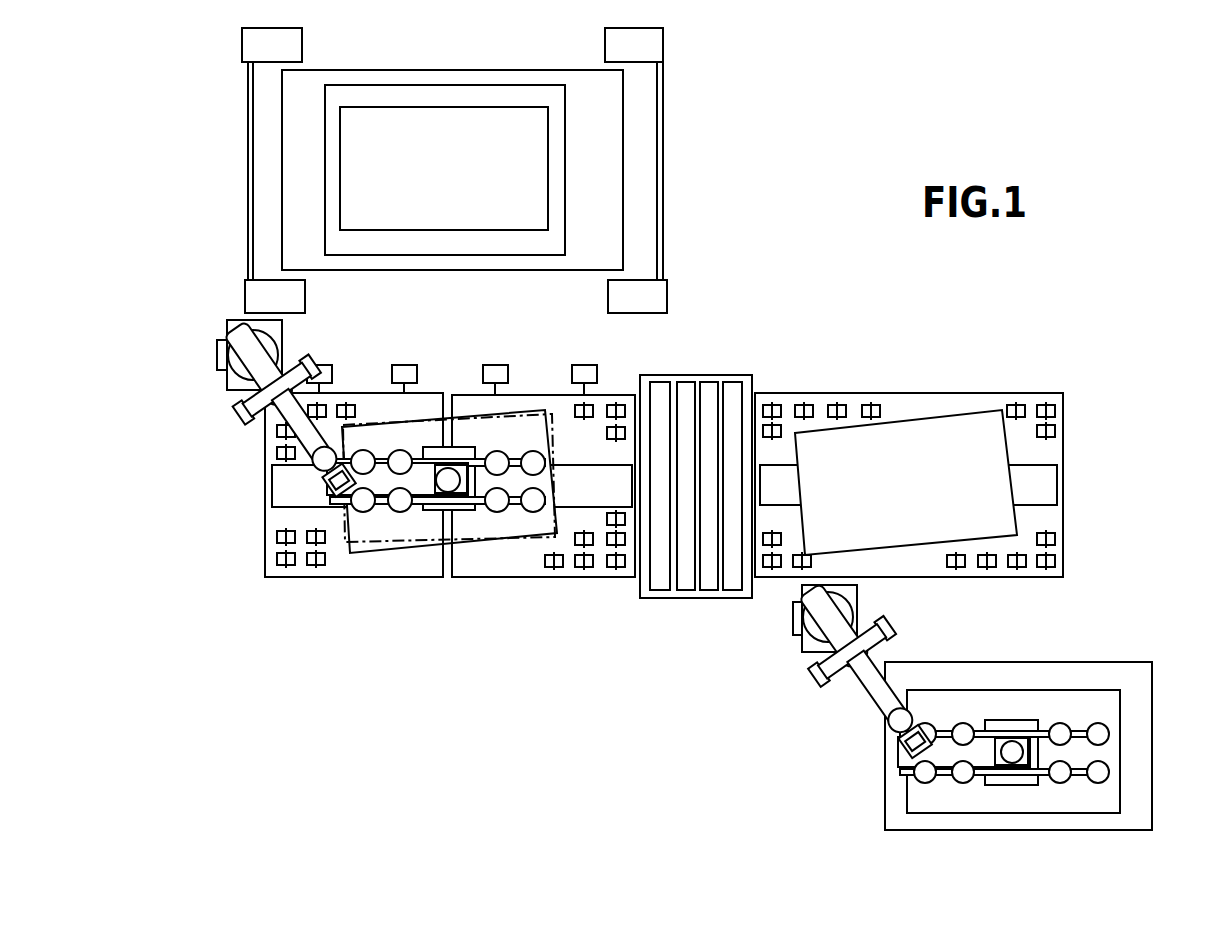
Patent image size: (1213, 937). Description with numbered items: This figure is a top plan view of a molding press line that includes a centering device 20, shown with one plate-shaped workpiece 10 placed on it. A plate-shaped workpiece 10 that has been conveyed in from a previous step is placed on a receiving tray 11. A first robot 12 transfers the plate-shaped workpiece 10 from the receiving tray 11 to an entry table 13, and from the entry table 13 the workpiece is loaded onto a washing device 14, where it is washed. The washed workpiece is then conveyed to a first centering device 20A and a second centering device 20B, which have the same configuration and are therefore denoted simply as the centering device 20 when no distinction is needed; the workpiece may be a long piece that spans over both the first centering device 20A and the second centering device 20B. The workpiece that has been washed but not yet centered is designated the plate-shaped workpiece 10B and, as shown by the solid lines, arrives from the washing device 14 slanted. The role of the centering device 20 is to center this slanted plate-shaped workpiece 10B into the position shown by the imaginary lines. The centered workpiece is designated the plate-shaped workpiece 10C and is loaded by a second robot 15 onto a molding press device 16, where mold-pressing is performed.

The plate-shaped workpiece 10 is at (913, 450).
The plate-shaped workpiece (washed, not yet centered) 10B is at (520, 415).
The plate-shaped workpiece (centered) 10C is at (498, 545).
The receiving tray 11 is at (1138, 748).
The first robot 12 is at (805, 652).
The entry table 13 is at (1043, 486).
The washing device 14 is at (695, 593).
The second robot 15 is at (240, 375).
The molding press device 16 is at (302, 173).
The centering device 20 is at (450, 537).
The first centering device 20A is at (537, 572).
The second centering device 20B is at (340, 565).